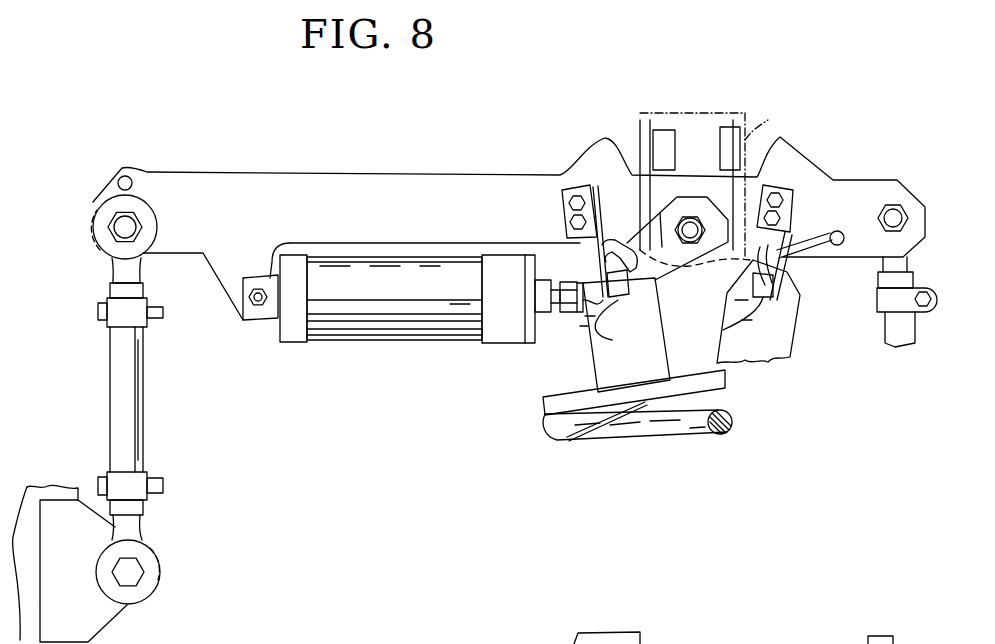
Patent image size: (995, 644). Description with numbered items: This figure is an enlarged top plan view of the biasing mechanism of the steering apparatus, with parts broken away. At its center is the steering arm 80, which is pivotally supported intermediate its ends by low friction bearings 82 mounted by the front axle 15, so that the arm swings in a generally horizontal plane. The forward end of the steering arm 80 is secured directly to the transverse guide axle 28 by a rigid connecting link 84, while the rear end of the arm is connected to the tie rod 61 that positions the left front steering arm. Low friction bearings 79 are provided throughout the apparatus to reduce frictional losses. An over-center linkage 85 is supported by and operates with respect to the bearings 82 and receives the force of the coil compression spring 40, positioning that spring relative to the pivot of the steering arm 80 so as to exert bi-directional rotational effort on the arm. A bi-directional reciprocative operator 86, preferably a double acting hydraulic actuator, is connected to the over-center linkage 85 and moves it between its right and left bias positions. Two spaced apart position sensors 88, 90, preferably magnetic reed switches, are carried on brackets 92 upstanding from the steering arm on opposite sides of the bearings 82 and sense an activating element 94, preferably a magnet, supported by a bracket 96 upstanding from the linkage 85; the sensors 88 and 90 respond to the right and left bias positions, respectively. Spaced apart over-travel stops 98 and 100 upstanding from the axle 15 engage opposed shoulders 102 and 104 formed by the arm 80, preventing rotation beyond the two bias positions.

The steering arm 80 is at (413, 185).
The rigid connecting link 84 is at (138, 368).
The guide axle 28 is at (57, 490).
The bi-directional reciprocative operator 86 is at (398, 320).
The position sensor 90 is at (583, 320).
The bracket 96 is at (612, 338).
The over-center linkage 85 is at (653, 358).
The coil compression spring 40 is at (552, 415).
The activating element 94 is at (637, 320).
The brackets 92 is at (603, 187).
The shoulder 102 is at (617, 150).
The over-travel stop 98 is at (665, 125).
The over-travel stop 100 is at (735, 128).
The front axle 15 is at (758, 146).
The shoulder 104 is at (778, 140).
The low friction bearings 79 is at (895, 212).
The low friction bearings 82 is at (690, 225).
The position sensor 88 is at (772, 298).
The tie rod 61 is at (900, 345).